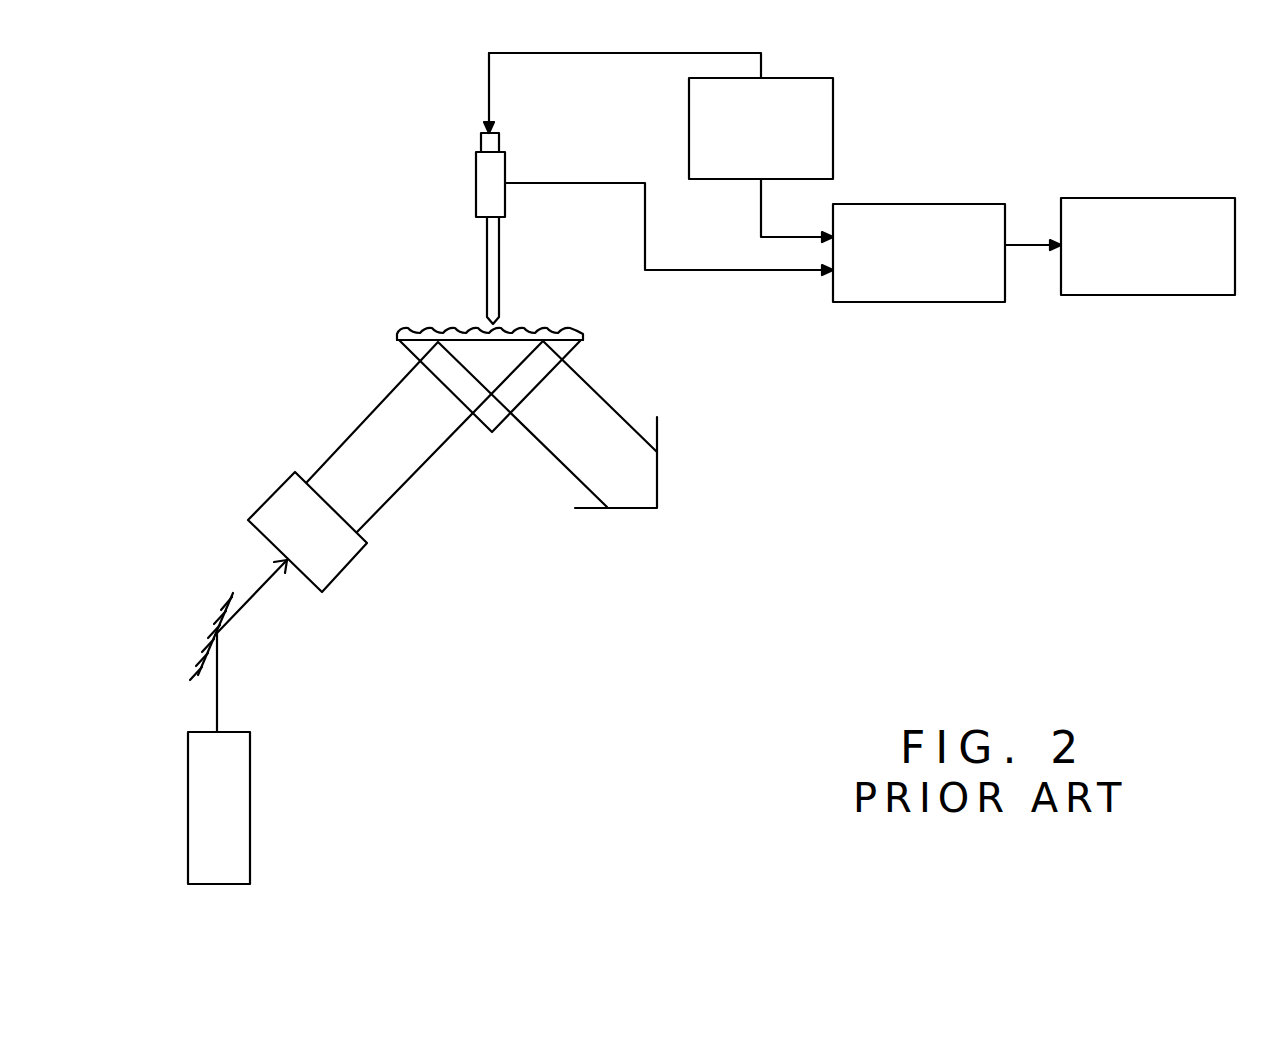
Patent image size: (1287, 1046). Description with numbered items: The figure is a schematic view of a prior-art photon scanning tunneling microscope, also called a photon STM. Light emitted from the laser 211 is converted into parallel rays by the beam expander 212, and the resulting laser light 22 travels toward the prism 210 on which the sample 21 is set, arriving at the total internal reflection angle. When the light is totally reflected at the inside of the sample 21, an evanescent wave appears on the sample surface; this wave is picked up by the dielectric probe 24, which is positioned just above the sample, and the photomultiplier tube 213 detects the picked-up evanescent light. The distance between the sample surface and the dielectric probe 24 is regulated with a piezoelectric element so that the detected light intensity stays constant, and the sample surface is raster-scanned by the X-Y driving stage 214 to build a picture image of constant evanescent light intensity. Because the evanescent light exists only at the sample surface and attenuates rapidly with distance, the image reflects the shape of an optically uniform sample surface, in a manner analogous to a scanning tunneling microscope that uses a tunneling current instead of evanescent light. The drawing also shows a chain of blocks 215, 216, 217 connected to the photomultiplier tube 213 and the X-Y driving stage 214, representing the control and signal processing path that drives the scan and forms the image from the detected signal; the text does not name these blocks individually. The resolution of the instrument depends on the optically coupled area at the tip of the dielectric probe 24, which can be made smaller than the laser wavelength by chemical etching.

The sample 21 is at (583, 333).
The laser beam 22 is at (408, 473).
The dielectric probe 24 is at (499, 277).
The prism 210 is at (569, 353).
The laser 211 is at (250, 812).
The beam expander 212 is at (348, 563).
The photomultiplier tube 213 is at (476, 187).
The X-Y driving stage 214 is at (502, 147).
The controller 215 is at (827, 117).
The signal processor 216 is at (900, 305).
The display 217 is at (1152, 295).